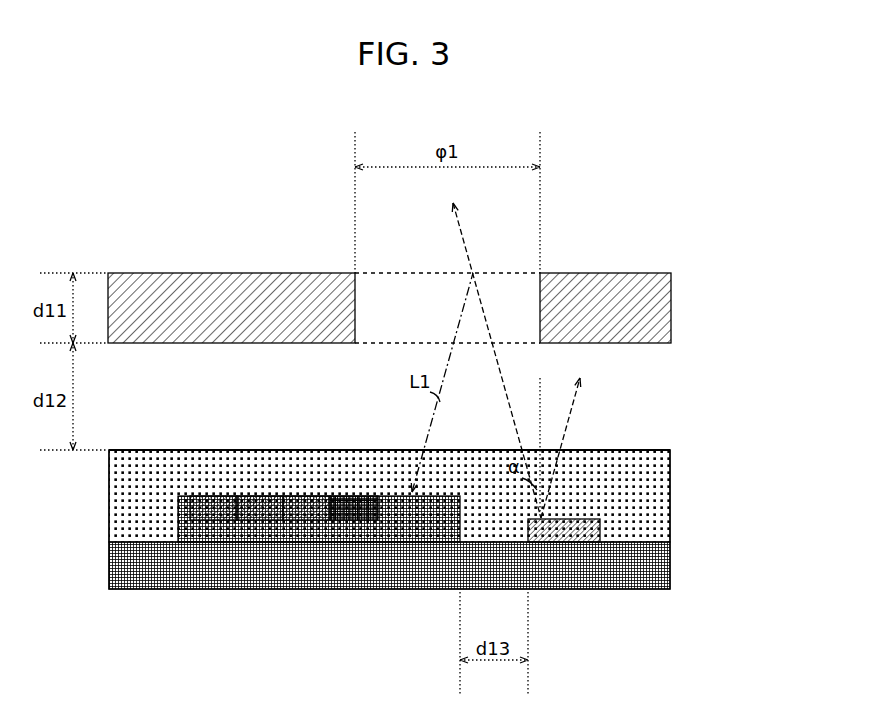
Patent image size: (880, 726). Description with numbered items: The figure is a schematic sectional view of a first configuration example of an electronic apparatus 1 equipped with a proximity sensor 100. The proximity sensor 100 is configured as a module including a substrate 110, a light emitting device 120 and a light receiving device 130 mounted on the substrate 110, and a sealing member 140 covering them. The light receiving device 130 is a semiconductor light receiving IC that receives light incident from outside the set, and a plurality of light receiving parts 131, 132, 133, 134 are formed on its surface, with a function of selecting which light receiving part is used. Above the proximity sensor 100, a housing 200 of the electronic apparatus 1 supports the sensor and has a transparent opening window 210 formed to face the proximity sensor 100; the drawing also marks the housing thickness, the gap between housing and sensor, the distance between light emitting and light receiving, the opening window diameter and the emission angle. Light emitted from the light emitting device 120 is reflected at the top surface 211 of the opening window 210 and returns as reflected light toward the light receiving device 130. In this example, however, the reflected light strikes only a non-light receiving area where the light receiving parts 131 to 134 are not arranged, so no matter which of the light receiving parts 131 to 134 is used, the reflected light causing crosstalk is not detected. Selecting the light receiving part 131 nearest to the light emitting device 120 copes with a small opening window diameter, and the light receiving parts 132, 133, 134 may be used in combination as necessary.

The electronic apparatus 1 is at (747, 192).
The proximity sensor 100 is at (426, 524).
The substrate 110 is at (629, 590).
The light emitting device 120 is at (571, 590).
The light receiving device 130 is at (319, 561).
The light receiving part 131 is at (357, 542).
The light receiving part 132 is at (312, 542).
The light receiving part 133 is at (265, 542).
The light receiving part 134 is at (218, 542).
The sealing member 140 is at (218, 450).
The housing 200 is at (685, 273).
The opening window 210 is at (403, 305).
The top surface 211 is at (508, 275).